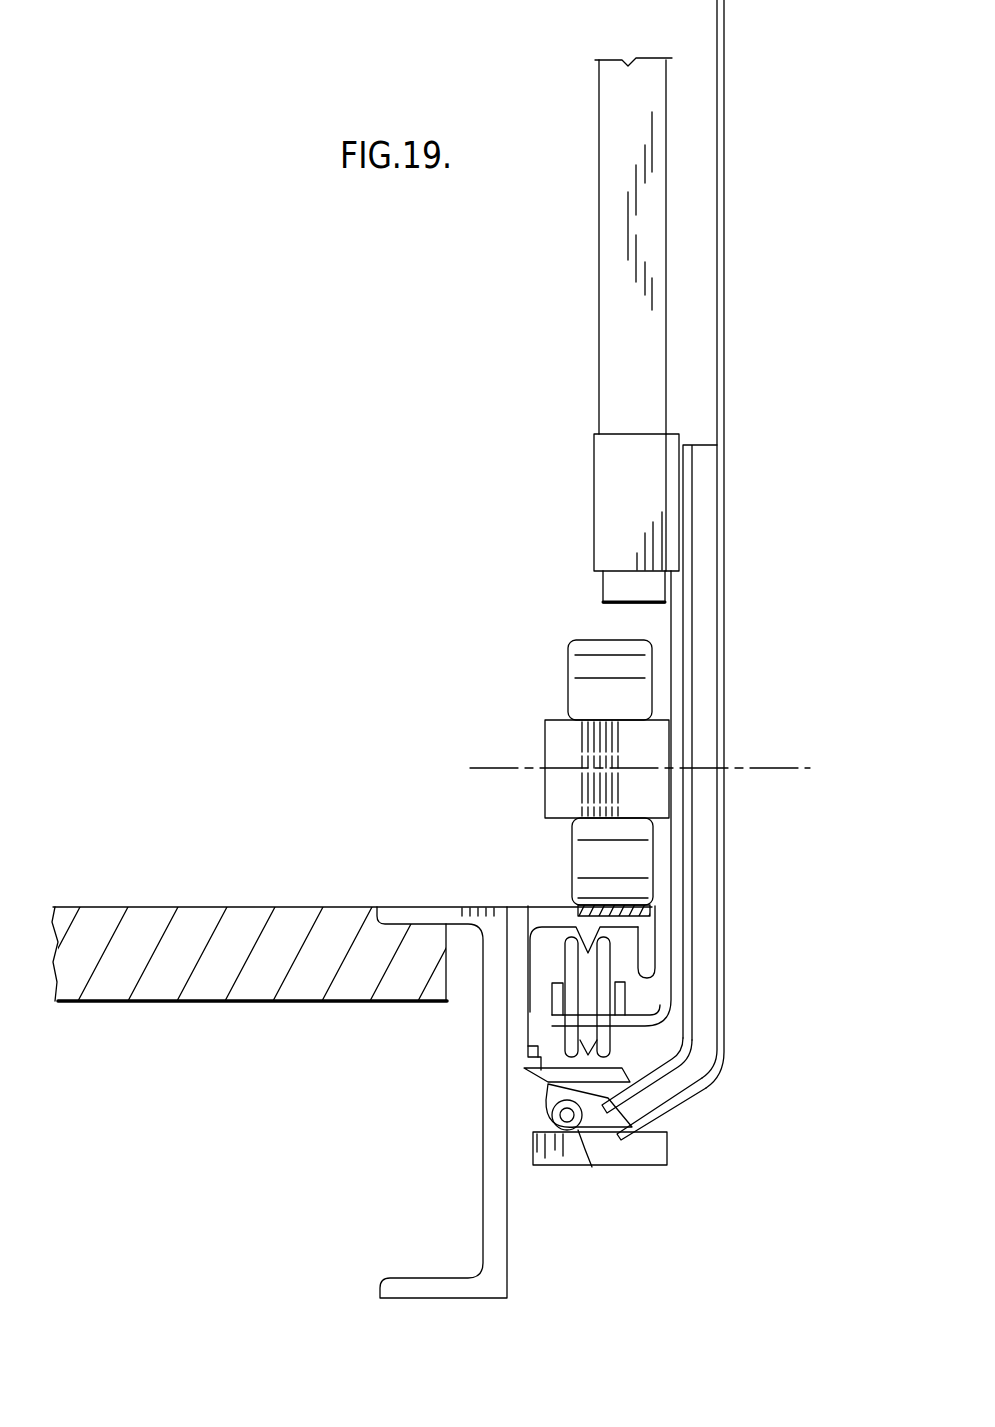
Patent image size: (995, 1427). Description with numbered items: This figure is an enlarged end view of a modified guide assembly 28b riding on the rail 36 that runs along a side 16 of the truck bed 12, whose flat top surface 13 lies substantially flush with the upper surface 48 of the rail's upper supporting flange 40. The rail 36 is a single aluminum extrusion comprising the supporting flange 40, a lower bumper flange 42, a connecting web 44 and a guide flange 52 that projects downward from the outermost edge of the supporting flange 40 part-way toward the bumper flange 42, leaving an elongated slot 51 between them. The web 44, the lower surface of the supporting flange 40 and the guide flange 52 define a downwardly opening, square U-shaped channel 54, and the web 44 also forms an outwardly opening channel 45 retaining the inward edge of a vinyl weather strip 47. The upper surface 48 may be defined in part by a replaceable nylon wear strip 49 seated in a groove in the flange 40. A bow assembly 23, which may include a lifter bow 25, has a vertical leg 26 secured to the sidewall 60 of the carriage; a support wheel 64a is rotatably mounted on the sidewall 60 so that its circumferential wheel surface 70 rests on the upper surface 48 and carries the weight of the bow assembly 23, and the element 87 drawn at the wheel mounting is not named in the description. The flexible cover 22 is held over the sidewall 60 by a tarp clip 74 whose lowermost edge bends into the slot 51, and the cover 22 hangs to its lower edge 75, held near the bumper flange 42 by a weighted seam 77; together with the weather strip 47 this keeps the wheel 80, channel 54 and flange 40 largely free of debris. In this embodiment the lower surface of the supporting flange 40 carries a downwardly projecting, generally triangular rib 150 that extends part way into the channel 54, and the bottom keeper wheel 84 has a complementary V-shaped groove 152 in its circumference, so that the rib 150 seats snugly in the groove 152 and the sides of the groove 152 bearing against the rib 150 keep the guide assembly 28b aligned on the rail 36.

The bed 12 is at (233, 896).
The top surface 13 is at (163, 903).
The side 16 is at (497, 1262).
The cover 22 is at (722, 360).
The bow assembly 23 is at (570, 242).
The lifter bow 25 is at (613, 114).
The leg 26 is at (646, 352).
The guide assembly 28b is at (545, 680).
The rail 36 is at (531, 1158).
The upper supporting flange 40 is at (500, 906).
The lower bumper flange 42 is at (645, 1165).
The connecting web 44 is at (583, 1110).
The channel 45 is at (535, 1063).
The weather strip 47 is at (545, 1100).
The upper surface 48 is at (546, 906).
The wear strip 49 is at (642, 912).
The slot 51 is at (672, 1127).
The guide flange 52 is at (655, 968).
The channel 54 is at (625, 945).
The sidewall 60 is at (673, 618).
The support wheel 64a is at (585, 700).
The circumferential wheel surface 70 is at (572, 638).
The tarp clip 74 is at (700, 668).
The lower edge 75 is at (522, 1122).
The weighted seam 77 is at (576, 1148).
The wheel 80 is at (646, 502).
The keeper wheel 84 is at (605, 1015).
The bearing block 87 is at (560, 745).
The rib 150 is at (560, 950).
The V-shaped groove 152 is at (645, 1072).